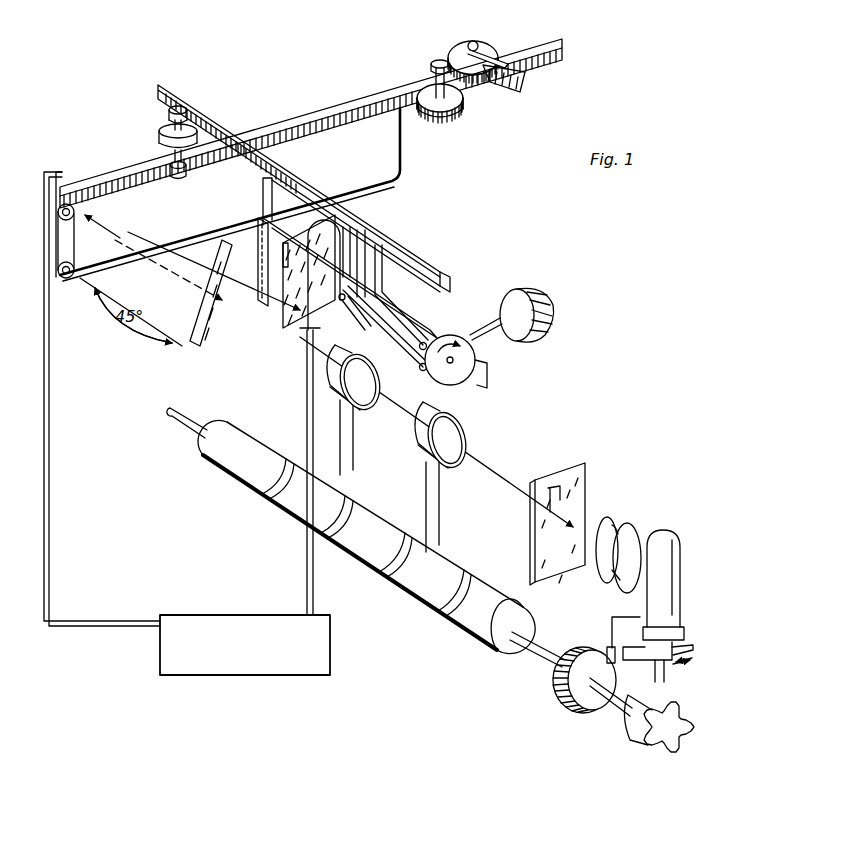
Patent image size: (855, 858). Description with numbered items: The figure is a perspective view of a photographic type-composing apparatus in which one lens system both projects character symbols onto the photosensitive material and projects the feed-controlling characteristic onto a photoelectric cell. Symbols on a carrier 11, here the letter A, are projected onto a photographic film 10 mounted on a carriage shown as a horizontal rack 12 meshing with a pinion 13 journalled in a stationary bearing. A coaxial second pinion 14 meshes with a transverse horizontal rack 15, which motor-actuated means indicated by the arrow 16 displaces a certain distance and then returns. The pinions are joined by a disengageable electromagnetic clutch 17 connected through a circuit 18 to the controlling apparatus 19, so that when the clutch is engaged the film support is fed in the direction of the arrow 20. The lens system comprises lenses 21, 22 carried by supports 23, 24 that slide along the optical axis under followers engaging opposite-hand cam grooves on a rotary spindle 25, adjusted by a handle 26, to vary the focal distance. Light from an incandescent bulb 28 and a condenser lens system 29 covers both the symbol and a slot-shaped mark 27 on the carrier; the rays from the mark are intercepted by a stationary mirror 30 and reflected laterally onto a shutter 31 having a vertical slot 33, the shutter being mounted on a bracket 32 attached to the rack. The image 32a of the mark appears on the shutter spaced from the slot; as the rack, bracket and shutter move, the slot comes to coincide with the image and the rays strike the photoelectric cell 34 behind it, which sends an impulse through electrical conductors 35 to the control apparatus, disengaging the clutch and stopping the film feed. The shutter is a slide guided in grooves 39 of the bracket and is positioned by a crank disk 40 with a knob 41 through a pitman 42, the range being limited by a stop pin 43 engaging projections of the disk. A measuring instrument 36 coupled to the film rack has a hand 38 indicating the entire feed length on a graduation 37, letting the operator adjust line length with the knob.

The photographic film 10 is at (396, 172).
The symbol carrier 11 is at (578, 472).
The horizontal rack 12 is at (355, 106).
The pinion 13 is at (179, 178).
The second pinion 14 is at (168, 114).
The horizontal rack 15 is at (220, 128).
The arrow 16 is at (441, 274).
The electromagnetic clutch 17 is at (157, 133).
The circuit 18 is at (52, 400).
The controlling apparatus 19 is at (215, 626).
The arrow 20 is at (108, 213).
The lens 21 is at (465, 433).
The lens 22 is at (362, 406).
The support 23 is at (440, 503).
The support 24 is at (355, 468).
The rotary spindle 25 is at (380, 522).
The handle 26 is at (636, 734).
The mark 27 is at (543, 482).
The incandescent bulb 28 is at (661, 540).
The condenser lens system 29 is at (614, 526).
The stationary mirror 30 is at (198, 318).
The shutter 31 is at (258, 222).
The bracket 32 is at (387, 310).
The image of the mark 32a is at (295, 263).
The slot 33 is at (292, 276).
The photoelectric cell 34 is at (332, 226).
The electrical conductors 35 is at (306, 382).
The measuring instrument 36 is at (455, 108).
The graduation 37 is at (512, 80).
The hand 38 is at (480, 48).
The grooves 39 is at (355, 333).
The crank disk 40 is at (461, 384).
The knob 41 is at (546, 300).
The pitman 42 is at (406, 357).
The stop pin 43 is at (416, 344).